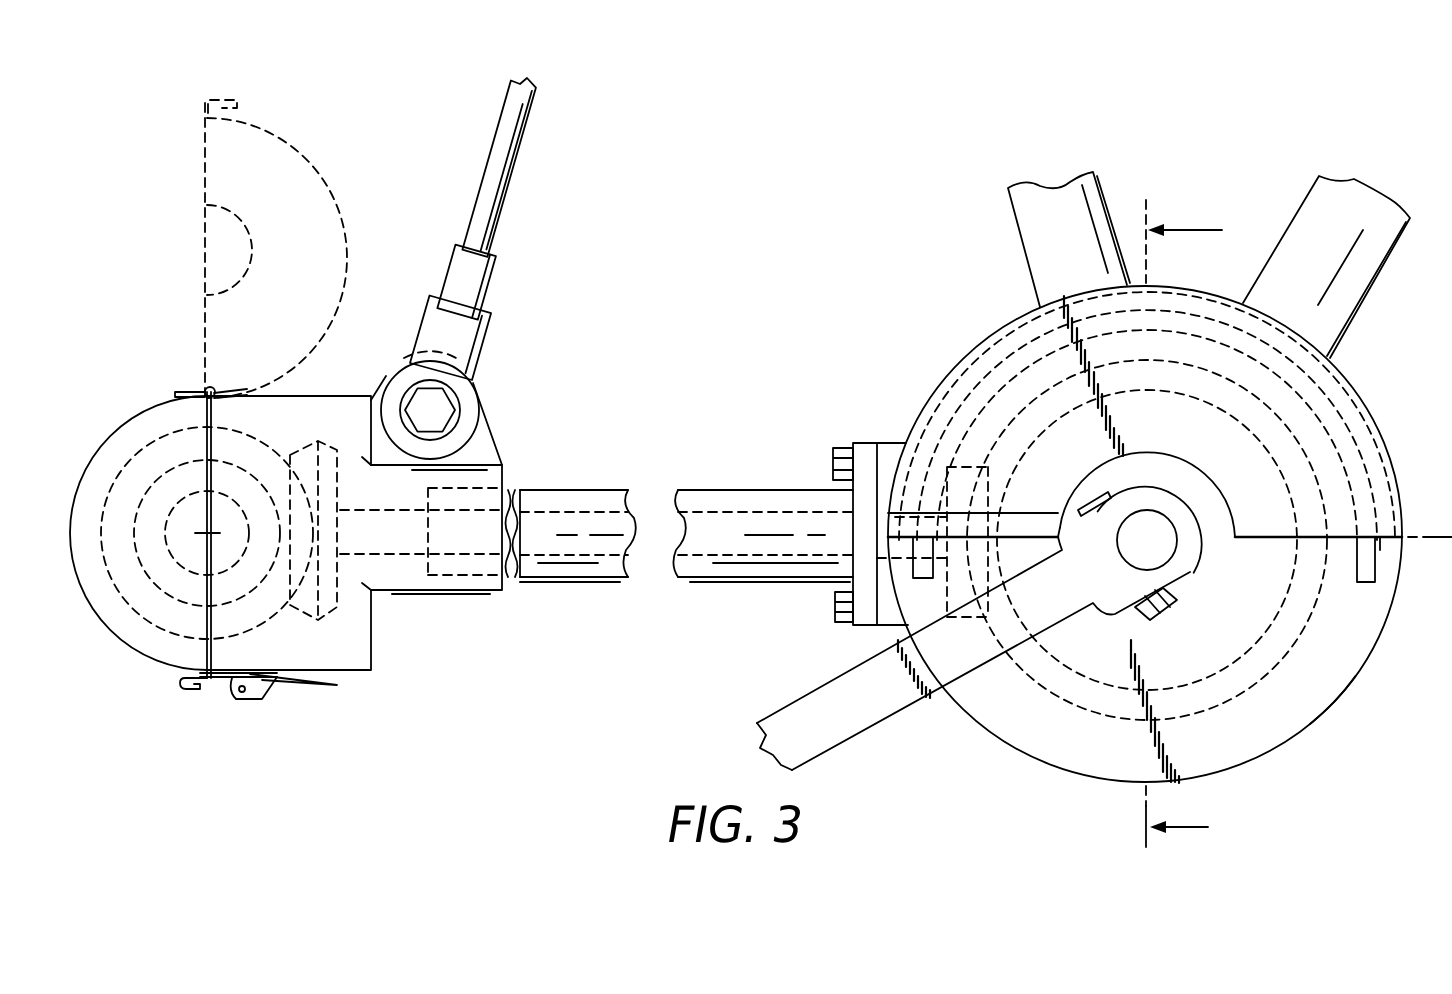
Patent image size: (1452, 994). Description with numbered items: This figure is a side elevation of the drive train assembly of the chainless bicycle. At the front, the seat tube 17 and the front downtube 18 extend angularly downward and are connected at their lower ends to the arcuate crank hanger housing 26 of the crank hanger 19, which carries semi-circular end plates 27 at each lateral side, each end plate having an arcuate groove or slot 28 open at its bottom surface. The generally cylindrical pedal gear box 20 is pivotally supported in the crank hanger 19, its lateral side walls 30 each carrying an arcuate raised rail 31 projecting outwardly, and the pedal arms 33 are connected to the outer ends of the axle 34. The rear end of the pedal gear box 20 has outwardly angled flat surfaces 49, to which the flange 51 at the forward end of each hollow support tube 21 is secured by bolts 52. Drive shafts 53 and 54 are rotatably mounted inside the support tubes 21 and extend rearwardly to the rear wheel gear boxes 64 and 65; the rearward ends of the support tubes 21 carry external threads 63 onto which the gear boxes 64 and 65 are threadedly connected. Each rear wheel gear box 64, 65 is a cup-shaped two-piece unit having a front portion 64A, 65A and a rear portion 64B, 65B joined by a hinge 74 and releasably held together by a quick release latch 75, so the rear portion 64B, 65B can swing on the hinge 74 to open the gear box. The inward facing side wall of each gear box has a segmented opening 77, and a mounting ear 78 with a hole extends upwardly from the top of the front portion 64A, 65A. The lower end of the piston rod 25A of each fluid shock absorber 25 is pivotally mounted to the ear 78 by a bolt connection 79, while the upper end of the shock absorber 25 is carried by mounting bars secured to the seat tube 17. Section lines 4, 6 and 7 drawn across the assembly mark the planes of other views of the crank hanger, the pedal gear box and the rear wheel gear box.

The section line 4- 4 is at (1069, 523).
The section line 6- 6 is at (771, 520).
The section line 7- 7 is at (180, 255).
The seat tube 17 is at (1012, 205).
The front downtube 18 is at (1375, 240).
The crank hanger 19 is at (1104, 477).
The pedal gear box 20 is at (1239, 563).
The hollow tubular support members 21 is at (686, 542).
The fluid shock absorbers 25 is at (503, 229).
The piston rod 25A is at (507, 193).
The arcuate crank hanger housing 26 is at (1384, 437).
The semi-circular end plates 27 is at (1012, 345).
The arcuate groove or slot 28 is at (979, 392).
The lateral side walls 30 is at (1327, 692).
The arcuate raised rail 31 is at (1390, 548).
The pedal arms 33 is at (885, 704).
The axle 34 is at (1162, 538).
The outwardly angled flat surfaces 49 is at (842, 502).
The flange 51 is at (862, 443).
The bolts 52 is at (835, 606).
The drive shaft 53 is at (678, 517).
The drive shaft 54 is at (670, 520).
The external threads 63 is at (511, 490).
The rear wheel gear box 64 is at (290, 409).
The rear wheel gear box 65 is at (290, 409).
The front portion 64A is at (359, 540).
The front portion 65A is at (369, 656).
The rear portion 64B is at (243, 409).
The rear portion 65B is at (300, 150).
The hinge 74 is at (210, 390).
The quick release latch 75 is at (262, 691).
The segmented opening 77 is at (258, 200).
The mounting ear 78 is at (460, 408).
The bolt connection 79 is at (455, 402).